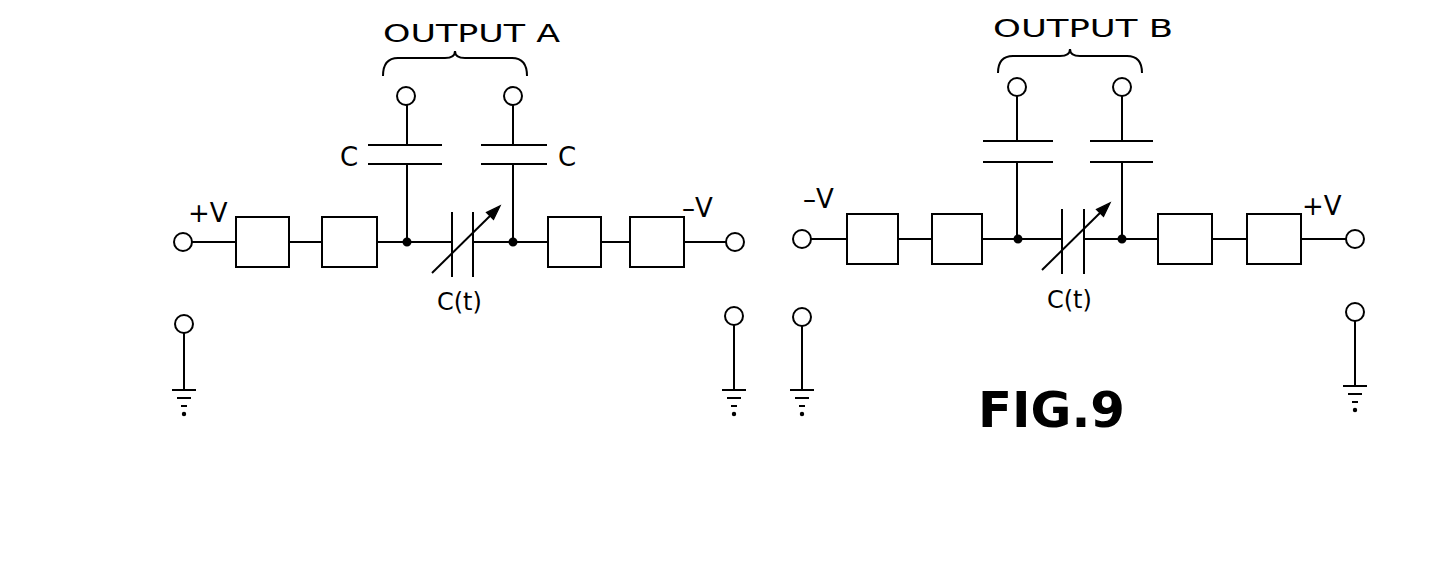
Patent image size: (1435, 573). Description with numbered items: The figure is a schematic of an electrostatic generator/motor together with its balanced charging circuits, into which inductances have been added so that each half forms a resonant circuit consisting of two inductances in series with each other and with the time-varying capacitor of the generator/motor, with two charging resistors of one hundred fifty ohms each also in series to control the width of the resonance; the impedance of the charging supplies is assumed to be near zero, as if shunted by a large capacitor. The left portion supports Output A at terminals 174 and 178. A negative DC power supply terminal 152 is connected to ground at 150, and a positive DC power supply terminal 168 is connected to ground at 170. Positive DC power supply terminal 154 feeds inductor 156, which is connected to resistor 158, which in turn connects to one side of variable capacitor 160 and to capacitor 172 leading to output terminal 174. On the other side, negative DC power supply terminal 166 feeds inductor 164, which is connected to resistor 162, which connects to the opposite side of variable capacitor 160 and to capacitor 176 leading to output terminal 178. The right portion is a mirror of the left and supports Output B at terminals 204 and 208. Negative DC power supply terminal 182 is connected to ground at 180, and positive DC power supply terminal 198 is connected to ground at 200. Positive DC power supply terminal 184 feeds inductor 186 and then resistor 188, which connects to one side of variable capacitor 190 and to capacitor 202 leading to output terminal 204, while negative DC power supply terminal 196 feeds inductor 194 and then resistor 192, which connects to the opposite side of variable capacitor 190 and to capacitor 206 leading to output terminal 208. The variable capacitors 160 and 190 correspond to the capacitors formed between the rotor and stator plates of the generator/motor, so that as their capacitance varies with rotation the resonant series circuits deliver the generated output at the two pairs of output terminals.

The ground 150 is at (190, 390).
The negative DC power supply terminal 152 is at (193, 323).
The positive DC power supply terminal 154 is at (176, 238).
The inductor 156 is at (277, 217).
The resistor 158 is at (355, 267).
The variable capacitor 160 is at (478, 266).
The resistor 162 is at (588, 267).
The inductor 164 is at (655, 217).
The negative DC power supply terminal 166 is at (736, 233).
The positive DC power supply terminal 168 is at (725, 318).
The ground 170 is at (722, 390).
The capacitor 172 is at (381, 145).
The output terminal 174 is at (397, 96).
The capacitor 176 is at (530, 145).
The output terminal 178 is at (522, 92).
The ground 180 is at (1350, 387).
The negative DC power supply terminal 182 is at (1346, 318).
The positive DC power supply terminal 184 is at (1358, 230).
The inductor 186 is at (1272, 214).
The resistor 188 is at (1196, 264).
The variable capacitor 190 is at (1088, 265).
The resistor 192 is at (962, 264).
The inductor 194 is at (893, 214).
The negative DC power supply terminal 196 is at (794, 236).
The positive DC power supply terminal 198 is at (811, 318).
The ground 200 is at (808, 390).
The capacitor 202 is at (1140, 141).
The output terminal 204 is at (1131, 87).
The capacitor 206 is at (992, 141).
The output terminal 208 is at (1008, 87).